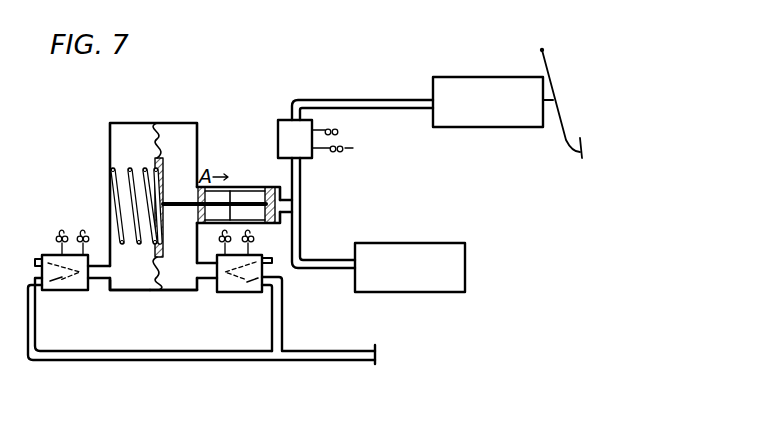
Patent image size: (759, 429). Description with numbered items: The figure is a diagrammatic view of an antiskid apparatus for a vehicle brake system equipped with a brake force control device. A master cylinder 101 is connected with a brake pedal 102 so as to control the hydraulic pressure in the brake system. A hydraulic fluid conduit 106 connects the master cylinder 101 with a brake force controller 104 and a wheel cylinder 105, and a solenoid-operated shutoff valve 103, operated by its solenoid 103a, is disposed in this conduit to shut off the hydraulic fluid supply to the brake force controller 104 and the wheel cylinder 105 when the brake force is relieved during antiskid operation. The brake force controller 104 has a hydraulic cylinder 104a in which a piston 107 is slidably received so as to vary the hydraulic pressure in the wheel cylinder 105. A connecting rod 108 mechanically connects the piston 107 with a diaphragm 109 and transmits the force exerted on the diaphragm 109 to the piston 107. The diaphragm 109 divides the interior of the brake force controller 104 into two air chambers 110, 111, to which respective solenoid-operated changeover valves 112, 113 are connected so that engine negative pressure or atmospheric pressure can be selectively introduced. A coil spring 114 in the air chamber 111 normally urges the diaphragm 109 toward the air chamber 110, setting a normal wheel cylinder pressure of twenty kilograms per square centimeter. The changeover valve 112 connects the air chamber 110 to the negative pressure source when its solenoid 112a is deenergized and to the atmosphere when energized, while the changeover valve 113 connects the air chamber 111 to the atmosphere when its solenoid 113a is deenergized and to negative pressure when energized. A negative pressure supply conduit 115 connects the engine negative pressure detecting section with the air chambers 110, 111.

The master cylinder 101 is at (470, 77).
The brake pedal 102 is at (548, 73).
The solenoid-operated shutoff valve 103 is at (301, 105).
The solenoid 103a is at (342, 131).
The brake force controller 104 is at (172, 123).
The hydraulic cylinder 104a is at (242, 187).
The wheel cylinder 105 is at (465, 272).
The hydraulic fluid conduit 106 is at (302, 182).
The piston 107 is at (263, 187).
The connecting rod 108 is at (230, 190).
The diaphragm 109 is at (155, 160).
The air chamber 110 is at (176, 291).
The air chamber 111 is at (128, 291).
The solenoid-operated changeover valve 112 is at (233, 293).
The solenoid 112a is at (220, 246).
The solenoid-operated changeover valve 113 is at (55, 291).
The solenoid 113a is at (57, 236).
The coil spring 114 is at (110, 197).
The negative pressure supply conduit 115 is at (287, 360).